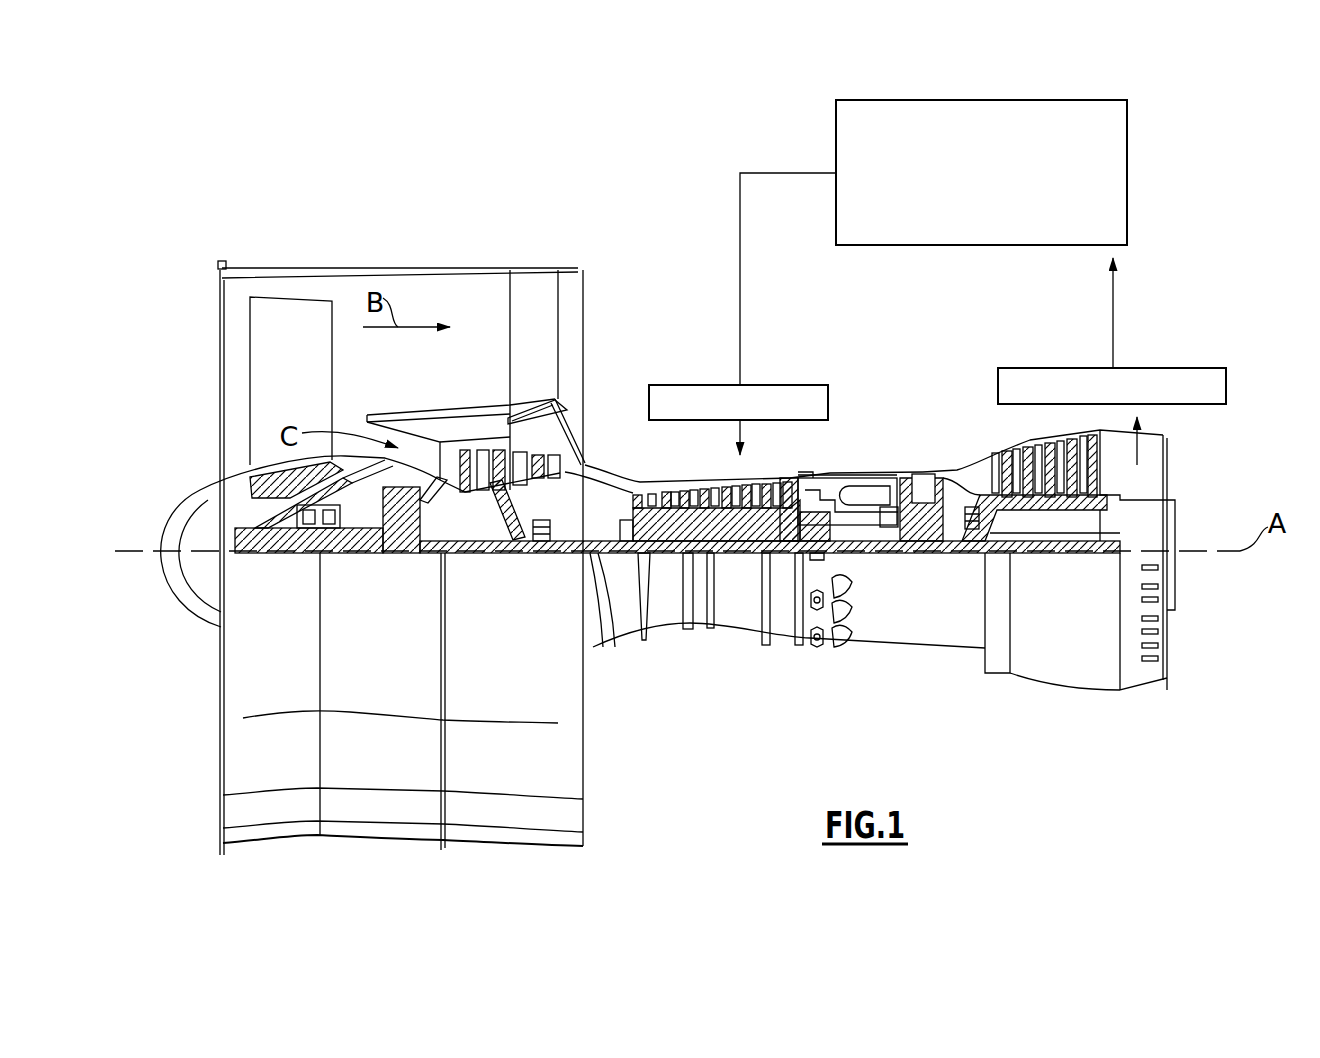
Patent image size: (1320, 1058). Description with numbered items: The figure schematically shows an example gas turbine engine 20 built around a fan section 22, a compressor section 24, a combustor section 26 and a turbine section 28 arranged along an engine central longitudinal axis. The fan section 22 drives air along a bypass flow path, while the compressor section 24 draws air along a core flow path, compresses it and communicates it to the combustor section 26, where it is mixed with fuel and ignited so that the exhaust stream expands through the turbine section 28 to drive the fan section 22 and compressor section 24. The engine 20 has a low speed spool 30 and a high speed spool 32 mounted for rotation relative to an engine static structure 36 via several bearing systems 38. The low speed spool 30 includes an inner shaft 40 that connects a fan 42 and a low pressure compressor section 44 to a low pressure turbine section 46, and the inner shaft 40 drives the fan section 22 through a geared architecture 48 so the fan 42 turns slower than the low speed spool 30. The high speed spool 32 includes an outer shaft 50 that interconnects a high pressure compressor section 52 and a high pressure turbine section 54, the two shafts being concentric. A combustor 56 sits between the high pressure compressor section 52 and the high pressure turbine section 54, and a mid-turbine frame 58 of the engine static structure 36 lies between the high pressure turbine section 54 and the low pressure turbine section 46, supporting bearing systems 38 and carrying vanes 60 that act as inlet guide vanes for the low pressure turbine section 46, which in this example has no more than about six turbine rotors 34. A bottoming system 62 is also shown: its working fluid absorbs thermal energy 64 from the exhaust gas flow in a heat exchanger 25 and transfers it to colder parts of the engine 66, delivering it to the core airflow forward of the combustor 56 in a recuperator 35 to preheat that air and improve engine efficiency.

The gas turbine engine 20 is at (420, 175).
The fan section 22 is at (207, 244).
The compressor section 24 is at (444, 358).
The heat exchanger 25 is at (1180, 368).
The combustor section 26 is at (848, 358).
The turbine section 28 is at (912, 358).
The low speed spool 30 is at (740, 570).
The high speed spool 32 is at (780, 477).
The turbine rotors 34 is at (1067, 513).
The recuperator 35 is at (658, 420).
The engine static structure 36 is at (782, 650).
The bearing systems 38 is at (297, 537).
The inner shaft 40 is at (600, 557).
The fan 42 is at (273, 398).
The low pressure compressor section 44 is at (567, 410).
The low pressure turbine section 46 is at (1050, 447).
The geared architecture 48 is at (408, 535).
The outer shaft 50 is at (863, 537).
The high pressure compressor section 52 is at (700, 490).
The high pressure turbine section 54 is at (923, 470).
The combustor 56 is at (857, 497).
The mid-turbine frame 58 is at (963, 452).
The vanes 60 is at (962, 488).
The bottoming system 62 is at (1127, 133).
The thermal energy 64 is at (1113, 300).
The colder parts of the engine 66 is at (740, 280).